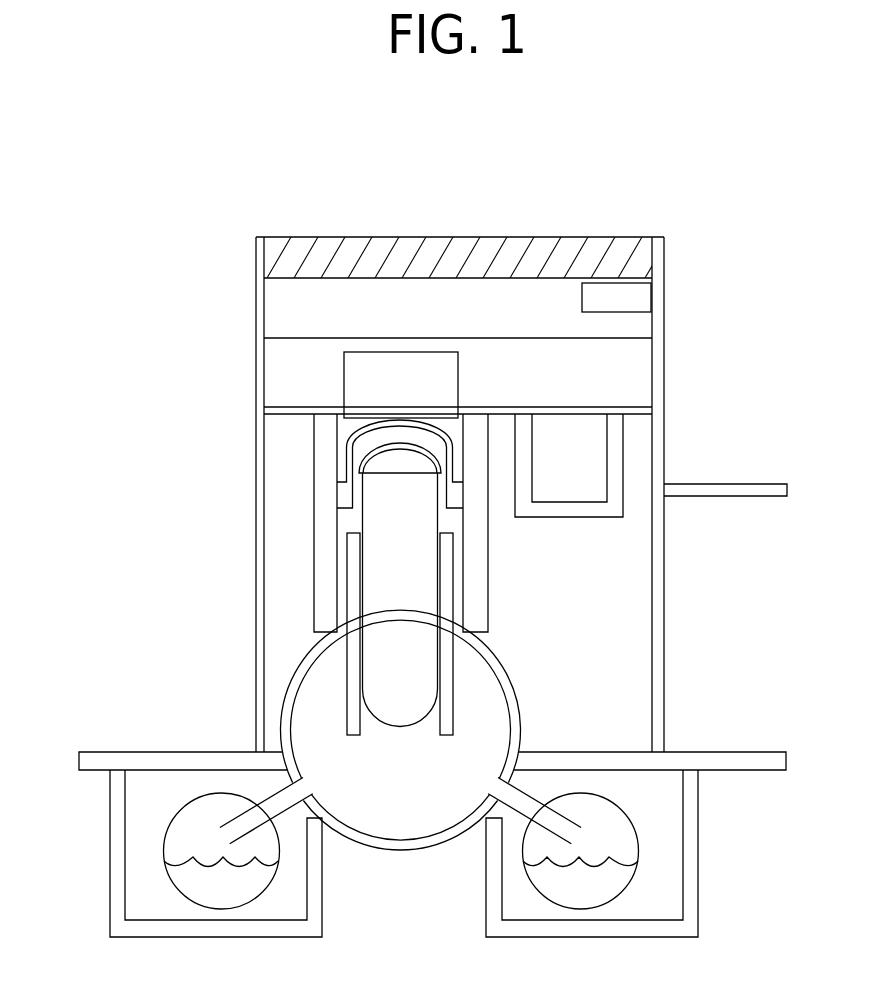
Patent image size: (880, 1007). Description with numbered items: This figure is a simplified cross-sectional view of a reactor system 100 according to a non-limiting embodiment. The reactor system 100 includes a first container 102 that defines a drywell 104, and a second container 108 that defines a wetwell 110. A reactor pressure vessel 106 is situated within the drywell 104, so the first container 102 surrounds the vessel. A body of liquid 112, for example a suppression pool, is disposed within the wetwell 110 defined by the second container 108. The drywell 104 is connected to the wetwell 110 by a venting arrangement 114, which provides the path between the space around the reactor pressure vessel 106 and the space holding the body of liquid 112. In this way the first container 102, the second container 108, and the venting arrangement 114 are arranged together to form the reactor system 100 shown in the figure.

The reactor system 100 is at (557, 177).
The first container 102 is at (502, 660).
The drywell 104 is at (317, 673).
The reactor pressure vessel 106 is at (427, 567).
The second container 108 is at (165, 832).
The wetwell 110 is at (205, 817).
The body of liquid 112 is at (205, 880).
The venting arrangement 114 is at (540, 792).